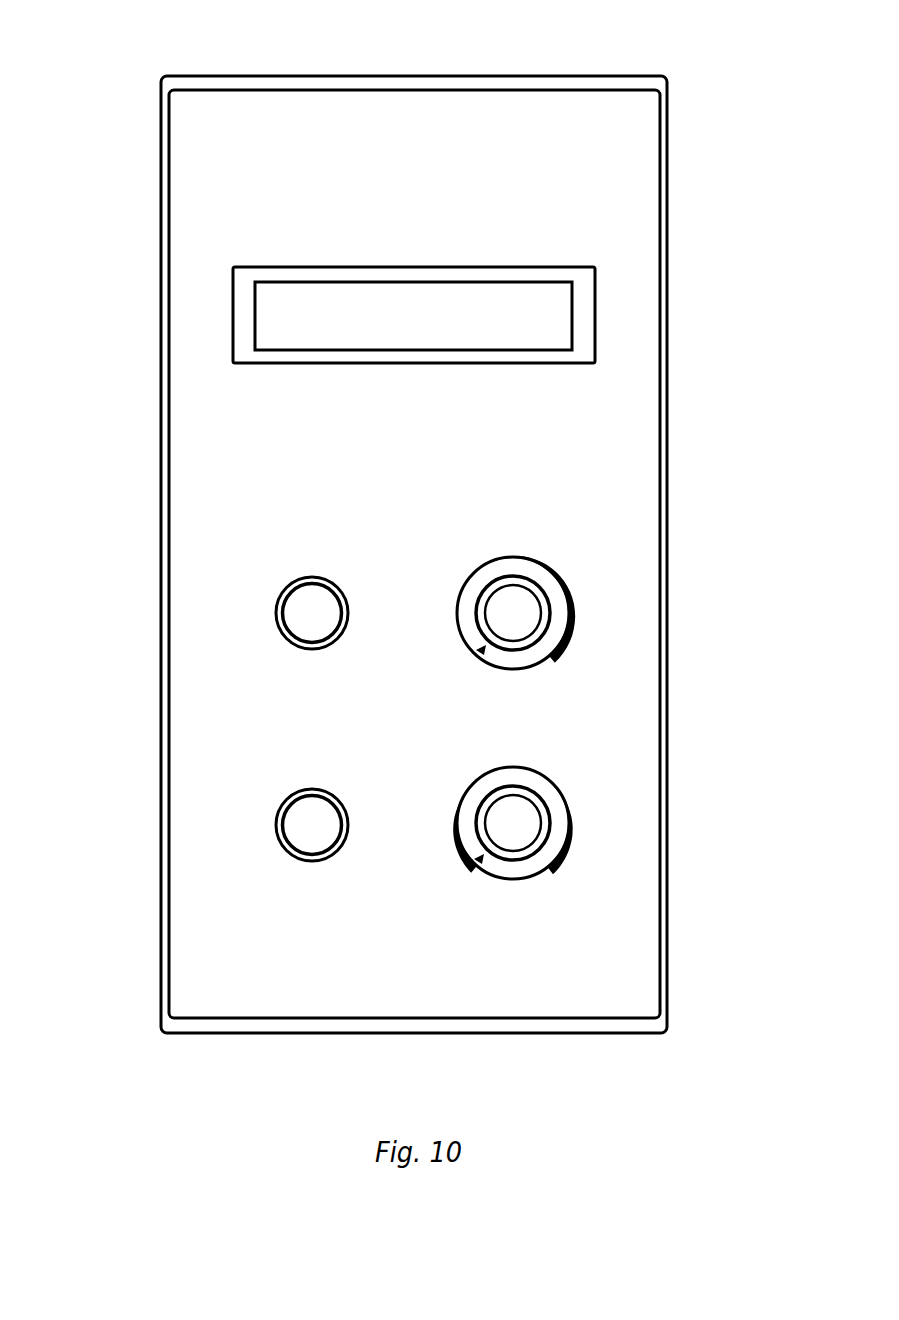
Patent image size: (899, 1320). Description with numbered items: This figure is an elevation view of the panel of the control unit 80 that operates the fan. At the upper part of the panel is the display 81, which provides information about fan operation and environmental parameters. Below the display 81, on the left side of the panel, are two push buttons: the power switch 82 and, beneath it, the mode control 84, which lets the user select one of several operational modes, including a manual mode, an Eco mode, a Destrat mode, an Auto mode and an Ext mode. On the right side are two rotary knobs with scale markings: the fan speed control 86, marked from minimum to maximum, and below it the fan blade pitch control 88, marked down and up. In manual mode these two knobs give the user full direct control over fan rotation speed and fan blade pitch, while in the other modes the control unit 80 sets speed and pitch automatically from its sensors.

The control unit 80 is at (233, 63).
The display 81 is at (598, 308).
The power switch 82 is at (277, 602).
The mode control 84 is at (275, 817).
The fan speed control 86 is at (573, 585).
The fan blade pitch control 88 is at (575, 808).